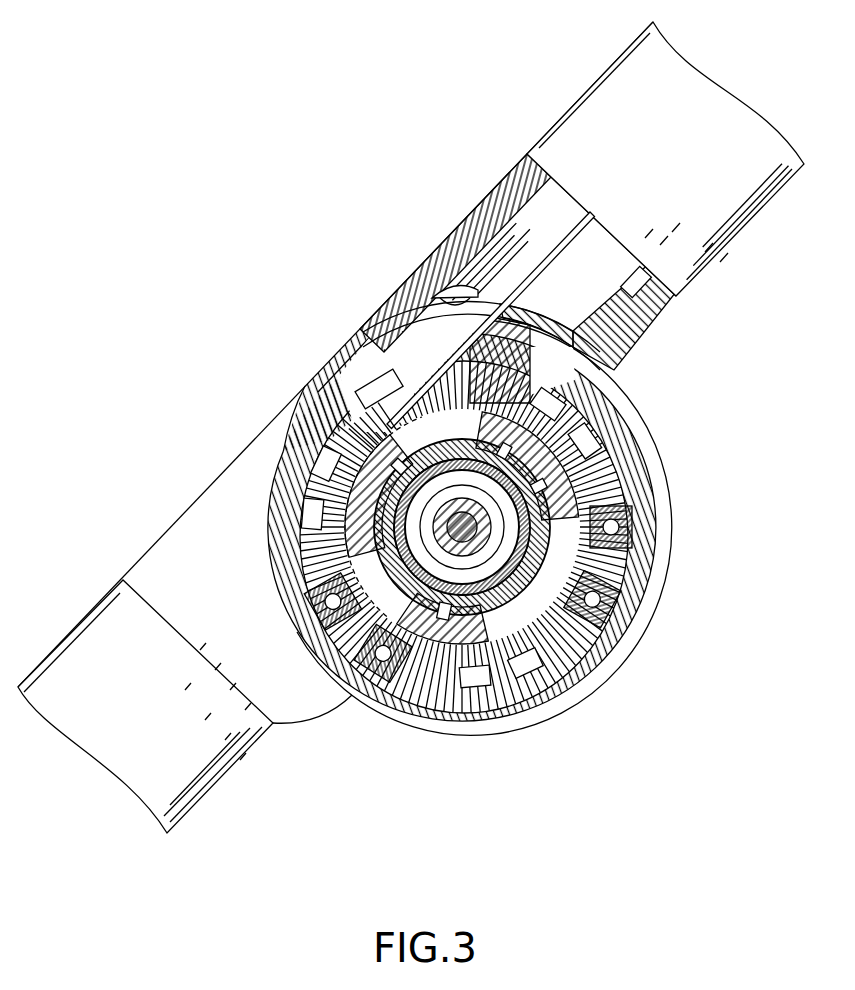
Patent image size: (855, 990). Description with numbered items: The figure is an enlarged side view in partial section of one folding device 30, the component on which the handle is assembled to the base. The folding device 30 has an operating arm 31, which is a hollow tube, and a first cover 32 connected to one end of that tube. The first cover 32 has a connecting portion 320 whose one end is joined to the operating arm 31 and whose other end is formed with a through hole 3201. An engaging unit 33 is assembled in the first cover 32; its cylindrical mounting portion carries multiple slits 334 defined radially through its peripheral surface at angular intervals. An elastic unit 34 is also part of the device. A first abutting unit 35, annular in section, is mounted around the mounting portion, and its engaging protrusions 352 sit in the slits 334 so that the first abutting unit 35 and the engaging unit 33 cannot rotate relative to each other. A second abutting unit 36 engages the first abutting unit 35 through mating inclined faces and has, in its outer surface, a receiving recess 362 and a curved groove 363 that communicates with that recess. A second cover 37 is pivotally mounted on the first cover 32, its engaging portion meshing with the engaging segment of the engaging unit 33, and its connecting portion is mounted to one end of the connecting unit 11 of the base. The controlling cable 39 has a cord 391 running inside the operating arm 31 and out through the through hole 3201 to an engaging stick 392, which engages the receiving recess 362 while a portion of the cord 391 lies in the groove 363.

The folding device 30 is at (205, 176).
The connecting unit 11 is at (82, 627).
The operating arm 31 is at (519, 162).
The first cover 32 is at (352, 300).
The connecting portion 320 is at (452, 220).
The through hole 3201 is at (457, 298).
The engaging unit 33 is at (535, 681).
The slits 334 is at (459, 594).
The elastic unit 34 is at (510, 536).
The first abutting unit 35 is at (572, 481).
The engaging protrusions 352 is at (528, 506).
The second abutting unit 36 is at (353, 621).
The receiving recess 362 is at (346, 694).
The groove 363 is at (318, 376).
The second cover 37 is at (202, 466).
The controlling cable 39 is at (554, 230).
The cord 391 is at (581, 233).
The engaging stick 392 is at (300, 582).